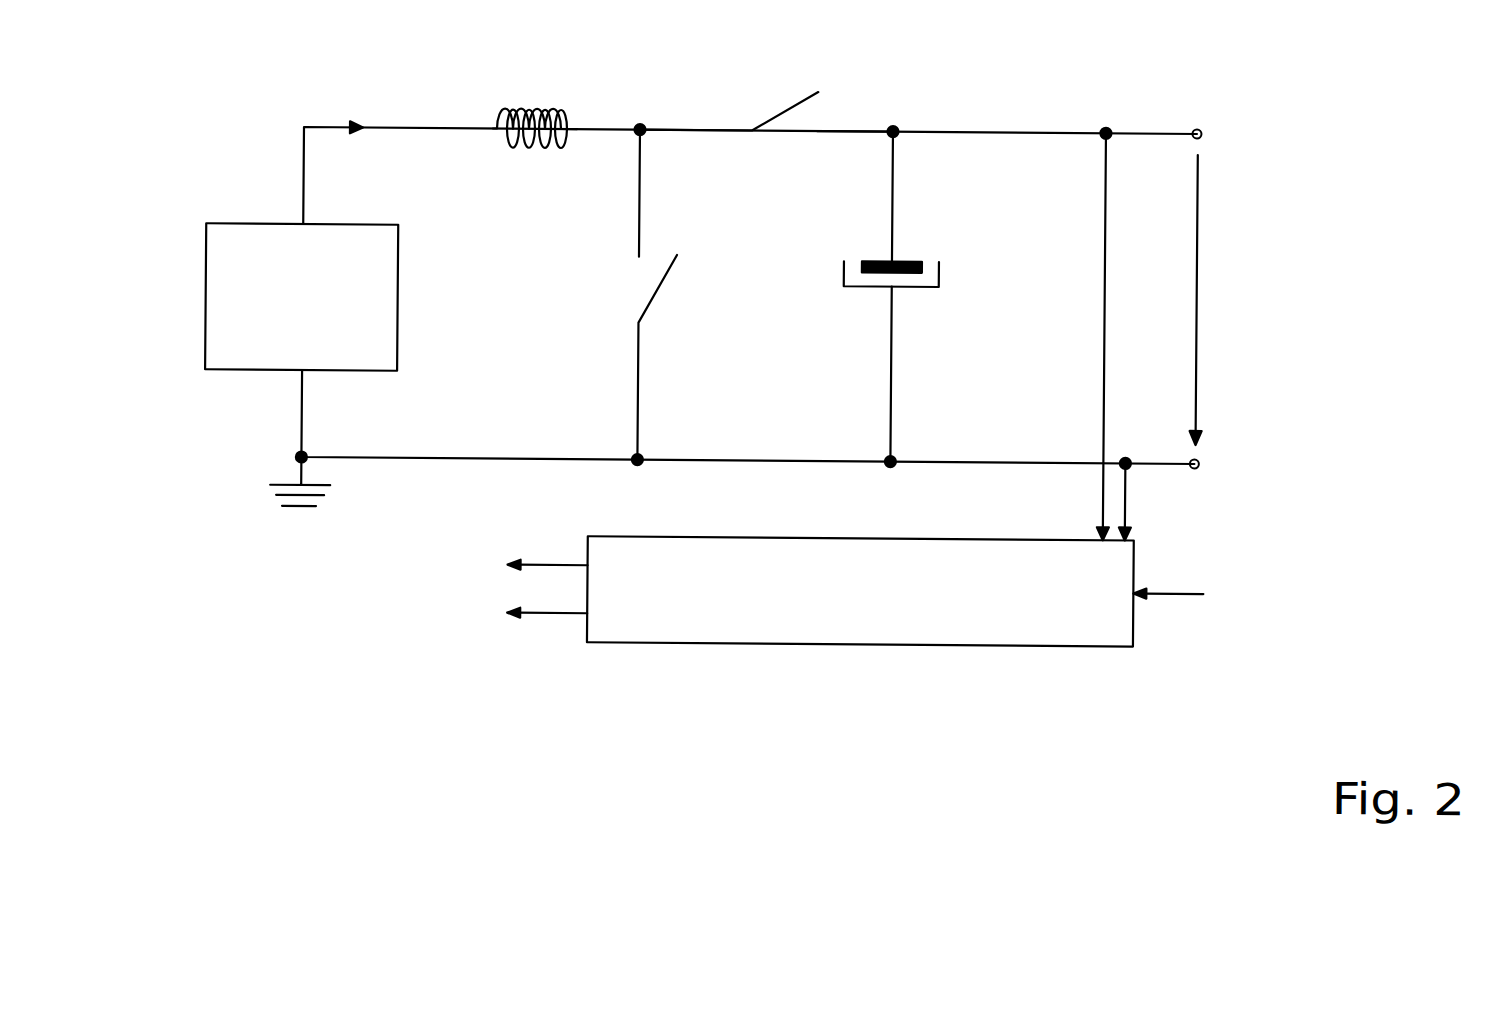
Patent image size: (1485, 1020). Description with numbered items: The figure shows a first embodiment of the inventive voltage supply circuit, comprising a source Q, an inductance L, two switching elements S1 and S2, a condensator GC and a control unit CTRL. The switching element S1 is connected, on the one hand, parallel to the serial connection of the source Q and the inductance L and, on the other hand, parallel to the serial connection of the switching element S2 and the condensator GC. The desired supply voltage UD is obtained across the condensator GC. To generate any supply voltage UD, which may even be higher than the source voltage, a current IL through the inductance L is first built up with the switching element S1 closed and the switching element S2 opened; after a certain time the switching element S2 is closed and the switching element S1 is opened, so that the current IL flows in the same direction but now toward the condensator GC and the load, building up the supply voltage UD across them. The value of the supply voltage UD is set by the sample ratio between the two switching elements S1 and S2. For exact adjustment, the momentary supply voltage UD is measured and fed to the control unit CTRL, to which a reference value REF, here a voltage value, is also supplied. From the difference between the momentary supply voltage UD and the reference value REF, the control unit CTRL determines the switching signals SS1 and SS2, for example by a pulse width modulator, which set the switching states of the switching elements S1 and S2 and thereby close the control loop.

The source Q is at (301, 297).
The current IL is at (360, 91).
The inductance L is at (539, 98).
The switching element S1 is at (566, 294).
The switching element S2 is at (766, 164).
The condensator GC is at (966, 277).
The supply voltage UD is at (1255, 299).
The control unit CTRL is at (860, 591).
The switching signal SS1 is at (377, 566).
The switching signal SS2 is at (377, 614).
The reference value REF is at (1240, 614).